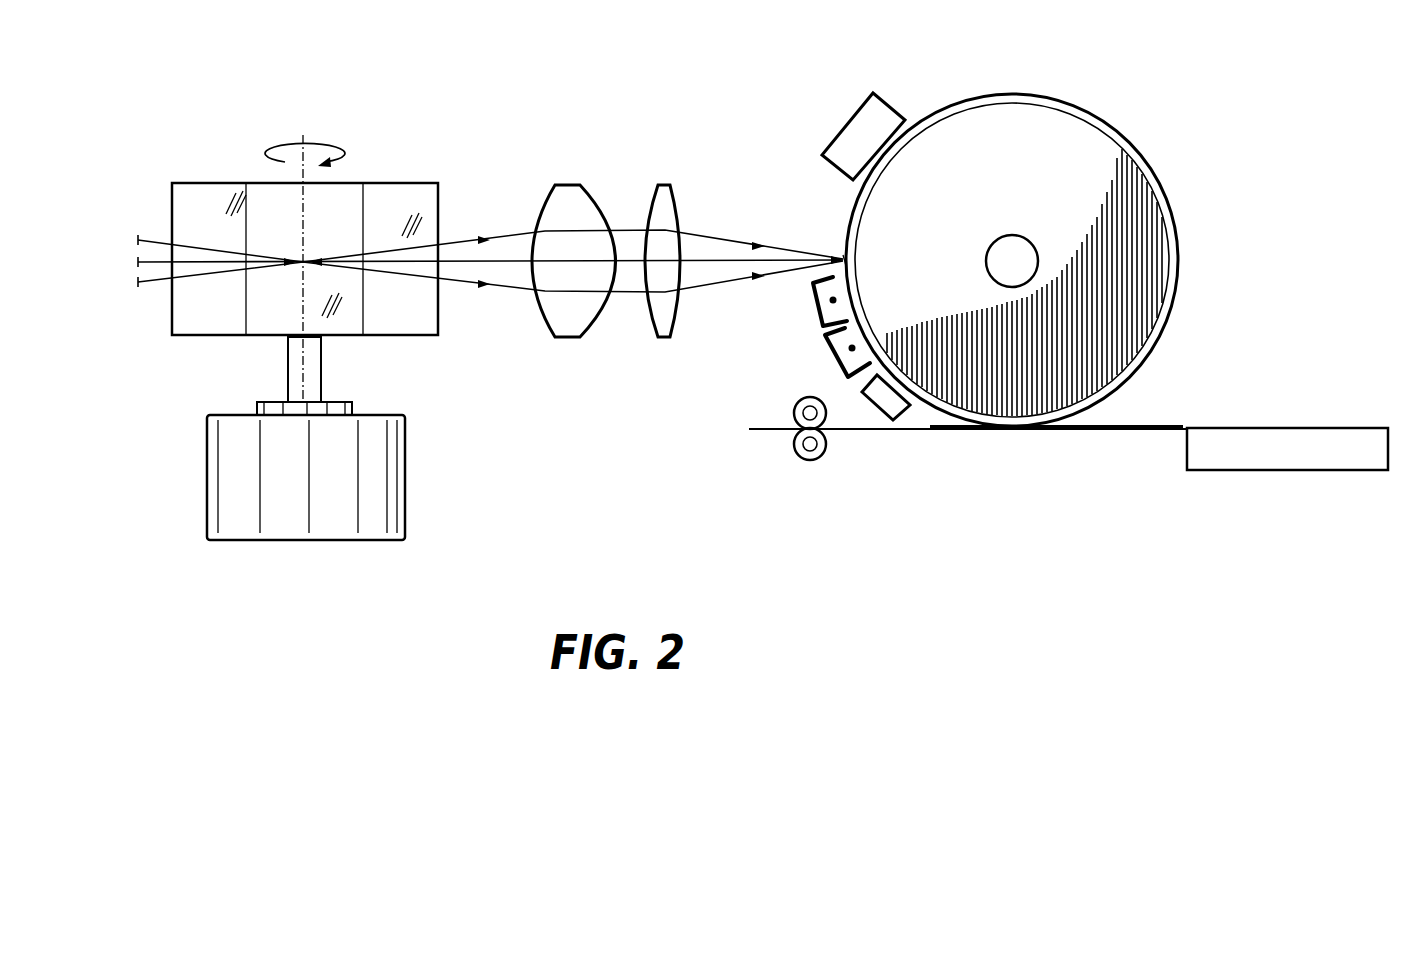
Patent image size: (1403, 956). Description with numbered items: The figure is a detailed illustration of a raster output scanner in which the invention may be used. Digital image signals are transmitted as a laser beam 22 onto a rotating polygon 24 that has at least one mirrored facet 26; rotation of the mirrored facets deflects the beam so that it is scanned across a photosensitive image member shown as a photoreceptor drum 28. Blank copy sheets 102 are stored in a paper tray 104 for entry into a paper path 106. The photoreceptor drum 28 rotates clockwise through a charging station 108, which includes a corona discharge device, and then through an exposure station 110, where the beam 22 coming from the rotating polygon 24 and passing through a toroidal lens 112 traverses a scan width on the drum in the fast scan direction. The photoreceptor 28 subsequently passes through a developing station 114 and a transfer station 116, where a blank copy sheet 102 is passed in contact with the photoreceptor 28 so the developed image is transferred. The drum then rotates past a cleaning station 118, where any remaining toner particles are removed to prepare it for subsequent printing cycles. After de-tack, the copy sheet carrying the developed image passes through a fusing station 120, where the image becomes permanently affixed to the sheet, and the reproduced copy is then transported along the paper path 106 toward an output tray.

The laser beam 22 is at (727, 239).
The rotating polygon 24 is at (330, 198).
The mirrored facet 26 is at (228, 338).
The photoreceptor drum 28 is at (1130, 143).
The blank copy sheets 102 is at (1152, 427).
The paper tray 104 is at (1258, 432).
The paper path 106 is at (762, 432).
The charging station 108 is at (812, 289).
The exposure station 110 is at (843, 258).
The toroidal lens 112 is at (661, 185).
The developing station 114 is at (884, 101).
The transfer station 116 is at (1010, 432).
The cleaning station 118 is at (862, 394).
The fusing station 120 is at (813, 466).